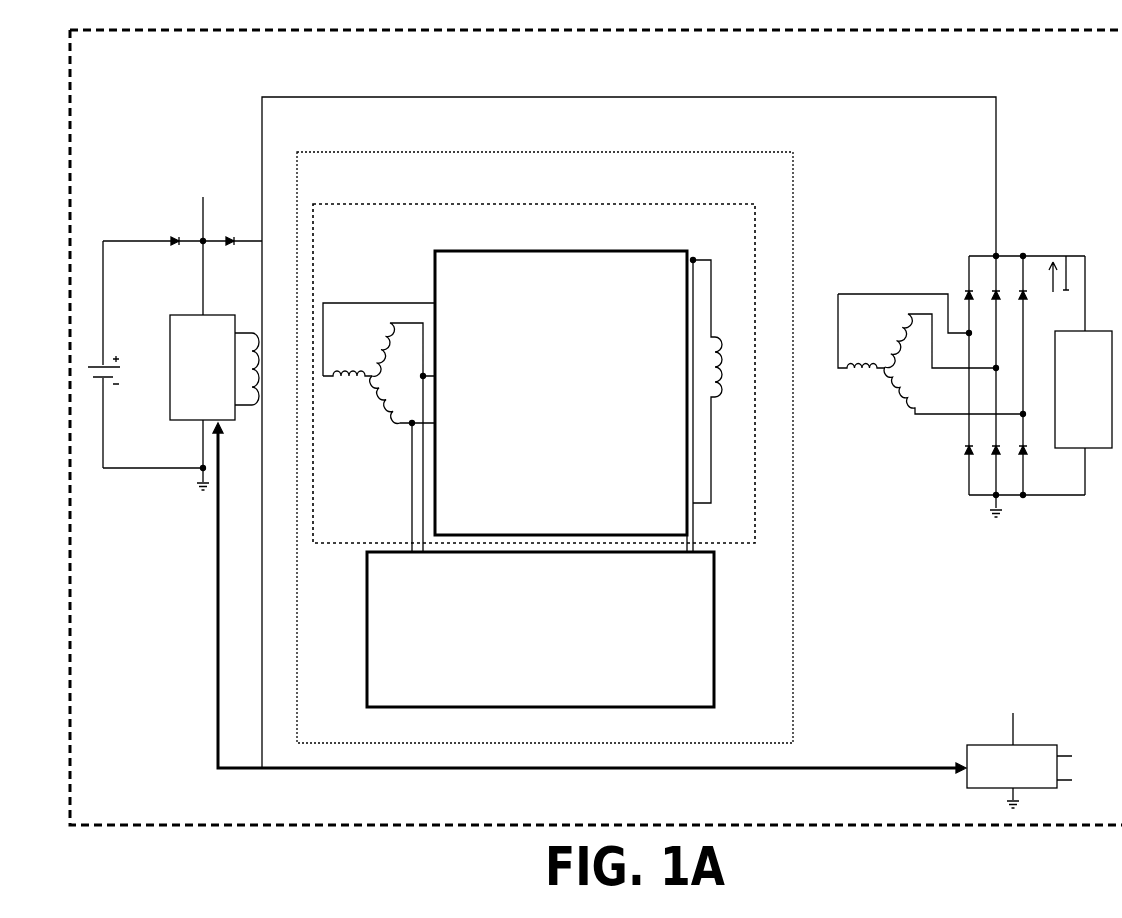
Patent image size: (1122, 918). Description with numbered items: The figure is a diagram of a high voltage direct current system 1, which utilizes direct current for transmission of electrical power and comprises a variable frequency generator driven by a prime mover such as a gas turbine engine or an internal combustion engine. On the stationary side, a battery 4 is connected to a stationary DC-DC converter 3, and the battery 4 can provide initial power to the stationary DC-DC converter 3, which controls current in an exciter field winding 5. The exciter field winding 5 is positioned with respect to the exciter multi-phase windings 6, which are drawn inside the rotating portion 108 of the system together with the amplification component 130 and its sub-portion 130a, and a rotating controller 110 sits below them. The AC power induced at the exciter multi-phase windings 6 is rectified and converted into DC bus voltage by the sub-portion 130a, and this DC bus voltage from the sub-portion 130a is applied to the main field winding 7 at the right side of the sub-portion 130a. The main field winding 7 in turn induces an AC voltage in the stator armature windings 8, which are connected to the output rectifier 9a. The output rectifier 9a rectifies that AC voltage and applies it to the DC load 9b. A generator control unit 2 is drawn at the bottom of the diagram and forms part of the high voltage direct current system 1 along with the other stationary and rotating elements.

The high voltage direct current system 1 is at (1100, 83).
The generator control unit 2 is at (1039, 745).
The stationary DC-DC converter 3 is at (182, 329).
The battery 4 is at (125, 346).
The exciter field winding 5 is at (255, 418).
The exciter multi-phase windings 6 is at (365, 392).
The main field winding 7 is at (731, 332).
The stator armature windings 8 is at (880, 397).
The output rectifier 9a is at (940, 490).
The DC load 9b is at (1083, 389).
The rotating controller 108 is at (545, 447).
The amplification component 130 is at (534, 373).
The sub-portion 130a is at (561, 393).
The rotating controller 110 is at (540, 482).